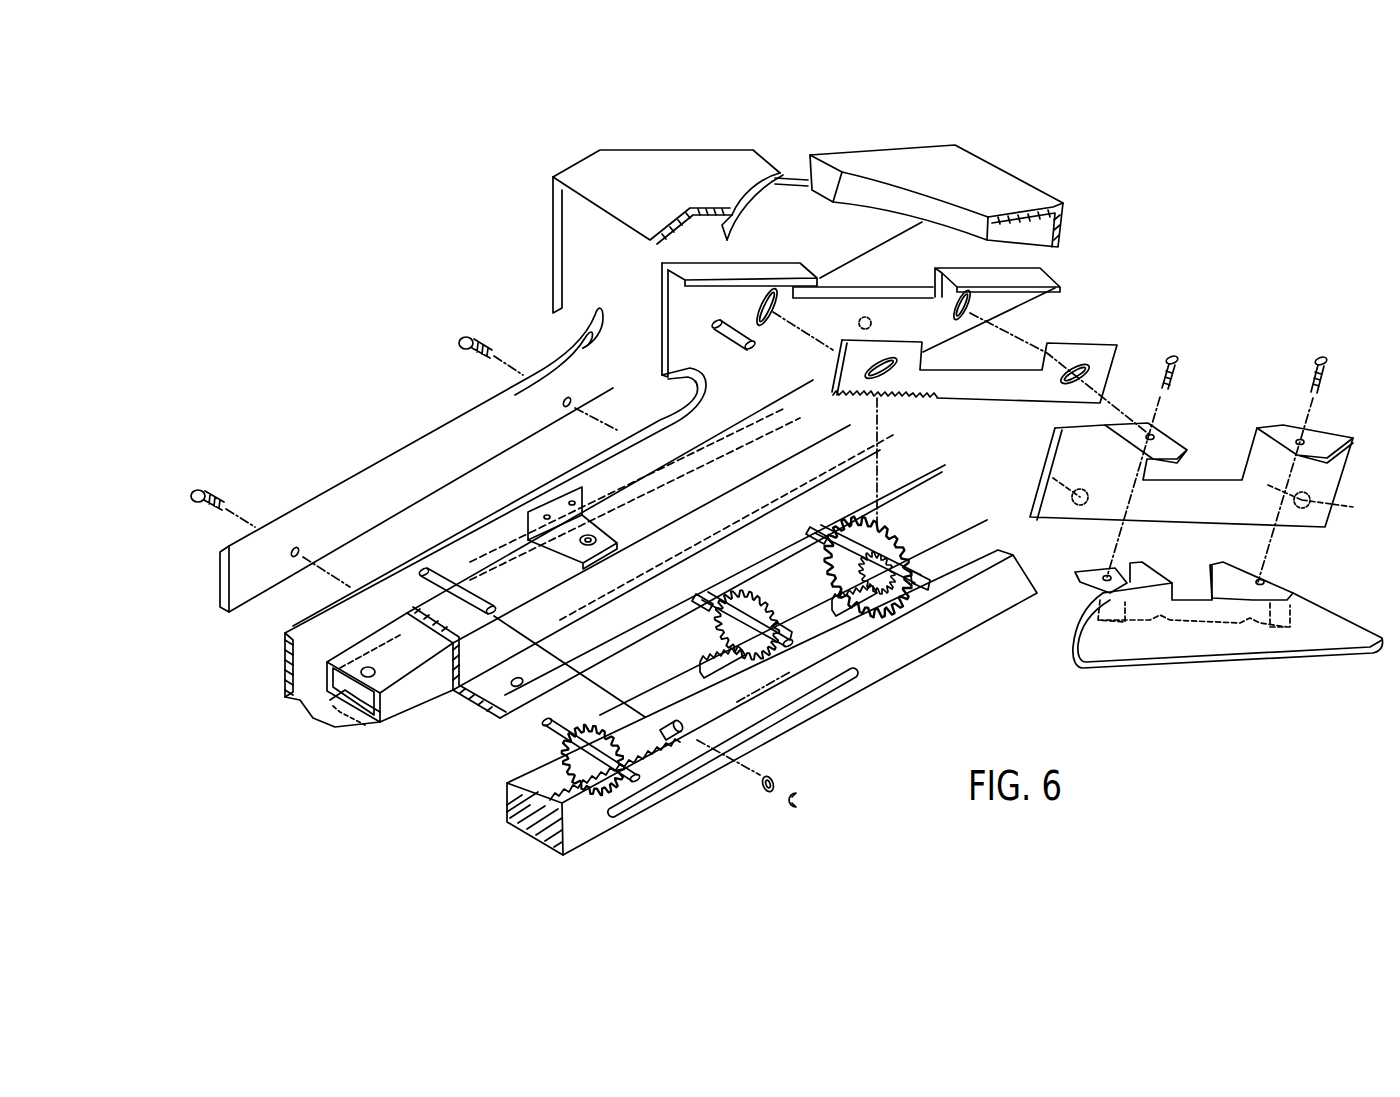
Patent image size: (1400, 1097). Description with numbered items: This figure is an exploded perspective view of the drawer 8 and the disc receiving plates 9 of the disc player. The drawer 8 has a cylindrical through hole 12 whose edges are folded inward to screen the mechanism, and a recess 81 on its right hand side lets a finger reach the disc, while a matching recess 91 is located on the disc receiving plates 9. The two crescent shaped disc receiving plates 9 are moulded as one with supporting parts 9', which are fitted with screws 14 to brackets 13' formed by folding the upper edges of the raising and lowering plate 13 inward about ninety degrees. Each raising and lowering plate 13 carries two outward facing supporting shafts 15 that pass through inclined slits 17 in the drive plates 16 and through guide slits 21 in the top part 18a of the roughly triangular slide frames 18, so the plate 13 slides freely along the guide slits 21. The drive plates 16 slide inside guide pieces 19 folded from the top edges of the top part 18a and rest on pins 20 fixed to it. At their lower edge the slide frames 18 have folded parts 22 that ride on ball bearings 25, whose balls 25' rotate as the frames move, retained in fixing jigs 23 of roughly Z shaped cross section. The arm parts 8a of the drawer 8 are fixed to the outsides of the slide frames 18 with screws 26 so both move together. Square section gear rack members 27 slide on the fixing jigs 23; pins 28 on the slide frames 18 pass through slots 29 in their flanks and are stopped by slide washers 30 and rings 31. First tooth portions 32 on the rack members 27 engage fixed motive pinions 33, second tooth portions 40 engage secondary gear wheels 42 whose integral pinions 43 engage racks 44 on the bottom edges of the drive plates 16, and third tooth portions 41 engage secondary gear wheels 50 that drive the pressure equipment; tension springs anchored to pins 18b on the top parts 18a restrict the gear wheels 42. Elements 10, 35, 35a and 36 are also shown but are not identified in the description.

The drawer 8 is at (630, 139).
The arm parts 8a is at (405, 440).
The recess 81 is at (787, 168).
The cover 10 is at (880, 158).
The through hole 12 is at (908, 195).
The raising and lowering plate 13 is at (1215, 476).
The brackets 13' is at (1247, 427).
The screws 14 is at (1178, 358).
The supporting shafts 15 is at (1077, 500).
The drive plates 16 is at (1012, 393).
The inclined slits 17 is at (860, 372).
The slide frames 18 is at (470, 530).
The top part 18a is at (677, 303).
The pins 18b is at (713, 340).
The guide pieces 19 is at (660, 262).
The pins 20 is at (869, 317).
The guide slits 21 is at (772, 288).
The folded parts 22 is at (290, 700).
The fixing jigs 23 is at (667, 463).
The ball bearings 25 is at (390, 690).
The balls 25' is at (355, 736).
The screws 26 is at (203, 490).
The gear rack members 27 is at (525, 825).
The pins 28 is at (473, 603).
The slots 29 is at (820, 695).
The slide washers 30 is at (765, 793).
The rings 31 is at (789, 808).
The first tooth portions 32 is at (680, 728).
The motive pinions 33 is at (563, 770).
The bracket 35 is at (627, 520).
The flange 35a is at (567, 560).
The hole 36 is at (588, 540).
The second tooth portions 40 is at (840, 597).
The third tooth portions 41 is at (705, 670).
The secondary gear wheels 42 is at (905, 518).
The pinions 43 is at (912, 540).
The racks 44 is at (848, 400).
The secondary gear wheels 50 is at (722, 628).
The disc receiving plates 9 is at (1228, 625).
The supporting parts 9' is at (1207, 581).
The recess 91 is at (1188, 587).